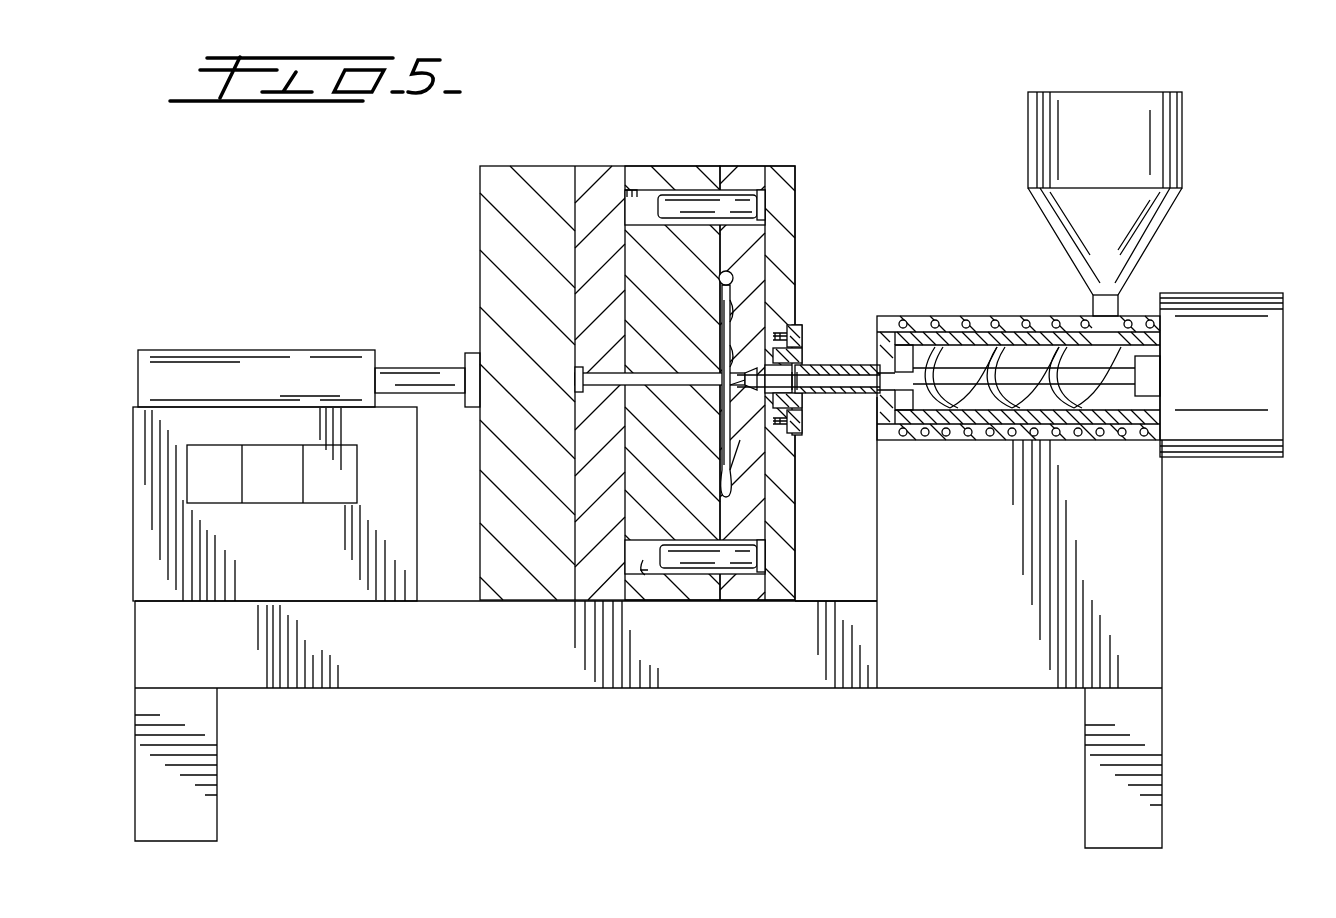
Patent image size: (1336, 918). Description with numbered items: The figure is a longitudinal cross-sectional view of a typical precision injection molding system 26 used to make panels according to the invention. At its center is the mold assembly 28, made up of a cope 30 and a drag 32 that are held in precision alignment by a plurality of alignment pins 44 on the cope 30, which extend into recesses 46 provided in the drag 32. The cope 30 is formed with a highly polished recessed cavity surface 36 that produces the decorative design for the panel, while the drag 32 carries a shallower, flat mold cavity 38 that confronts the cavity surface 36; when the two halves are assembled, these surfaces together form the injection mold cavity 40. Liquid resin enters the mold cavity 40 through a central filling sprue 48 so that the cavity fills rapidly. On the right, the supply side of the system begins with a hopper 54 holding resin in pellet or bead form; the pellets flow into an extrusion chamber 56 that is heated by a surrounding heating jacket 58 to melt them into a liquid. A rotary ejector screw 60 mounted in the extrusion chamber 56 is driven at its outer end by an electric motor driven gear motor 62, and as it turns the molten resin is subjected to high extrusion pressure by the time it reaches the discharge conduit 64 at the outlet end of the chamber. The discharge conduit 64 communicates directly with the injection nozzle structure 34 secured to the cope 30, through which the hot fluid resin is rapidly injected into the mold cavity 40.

The precision injection molding system 26 is at (622, 871).
The mold assembly 28 is at (881, 380).
The cope 30 is at (740, 166).
The drag 32 is at (645, 166).
The nozzle structure 34 is at (800, 400).
The recessed cavity surface 36 is at (730, 285).
The flat mold cavity 38 is at (722, 322).
The injection mold cavity 40 is at (738, 442).
The alignment pins 44 is at (692, 205).
The recesses 46 is at (627, 192).
The central filling sprue 48 is at (745, 380).
The hopper 54 is at (1182, 145).
The extrusion chamber 56 is at (983, 414).
The heating jacket 58 is at (930, 316).
The rotary ejector screw 60 is at (1052, 375).
The gear motor 62 is at (1245, 372).
The discharge conduit 64 is at (838, 362).